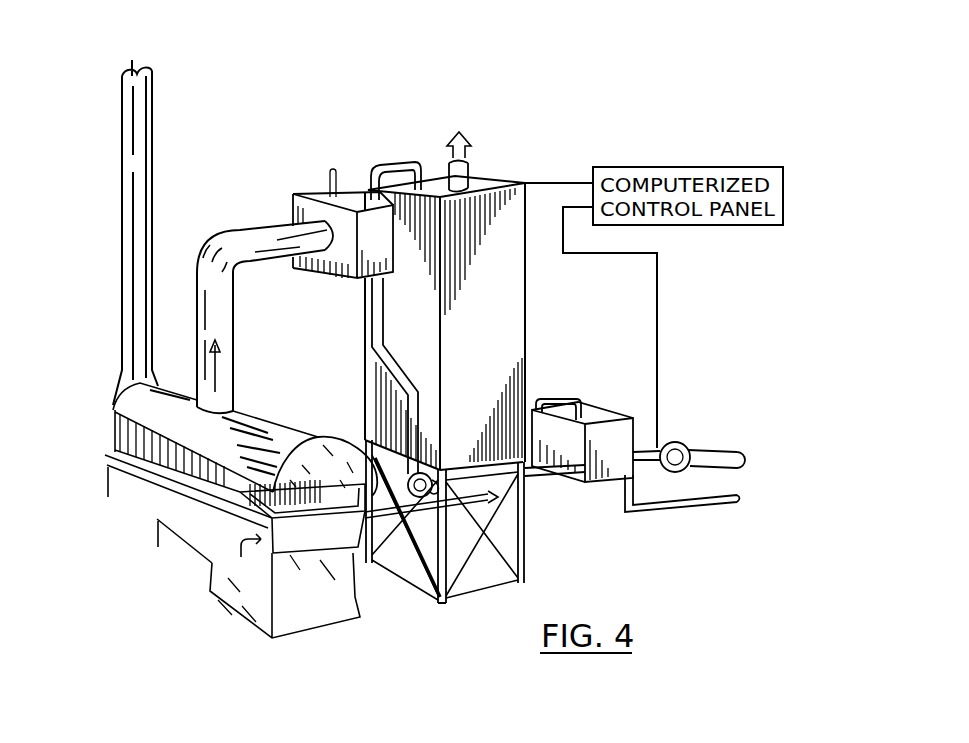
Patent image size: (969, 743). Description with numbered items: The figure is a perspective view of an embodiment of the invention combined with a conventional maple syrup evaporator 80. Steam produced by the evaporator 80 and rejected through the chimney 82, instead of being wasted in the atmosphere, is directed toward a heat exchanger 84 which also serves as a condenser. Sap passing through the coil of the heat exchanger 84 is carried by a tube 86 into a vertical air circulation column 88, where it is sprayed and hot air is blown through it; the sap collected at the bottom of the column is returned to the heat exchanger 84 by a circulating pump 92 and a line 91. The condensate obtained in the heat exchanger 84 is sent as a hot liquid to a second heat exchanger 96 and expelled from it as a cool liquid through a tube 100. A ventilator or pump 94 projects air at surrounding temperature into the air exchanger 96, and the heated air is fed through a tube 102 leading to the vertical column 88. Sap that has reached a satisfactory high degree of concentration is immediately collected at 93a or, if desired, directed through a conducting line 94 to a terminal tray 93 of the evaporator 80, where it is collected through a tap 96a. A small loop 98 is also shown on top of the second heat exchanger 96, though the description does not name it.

The evaporator 80 is at (318, 622).
The chimney 82 is at (235, 305).
The heat exchanger 84 is at (390, 242).
The tube 86 is at (385, 162).
The vertical air circulation column 88 is at (497, 334).
The line 91 is at (372, 330).
The circulating pump 92 is at (406, 478).
The terminal tray 93 is at (307, 535).
The collection point 93a is at (525, 535).
The ventilator 94 is at (681, 441).
The second heat exchanger 96 is at (626, 454).
The tap 96a is at (211, 551).
The pipe loop 98 is at (556, 404).
The tube 100 is at (478, 170).
The tube 102 is at (550, 478).